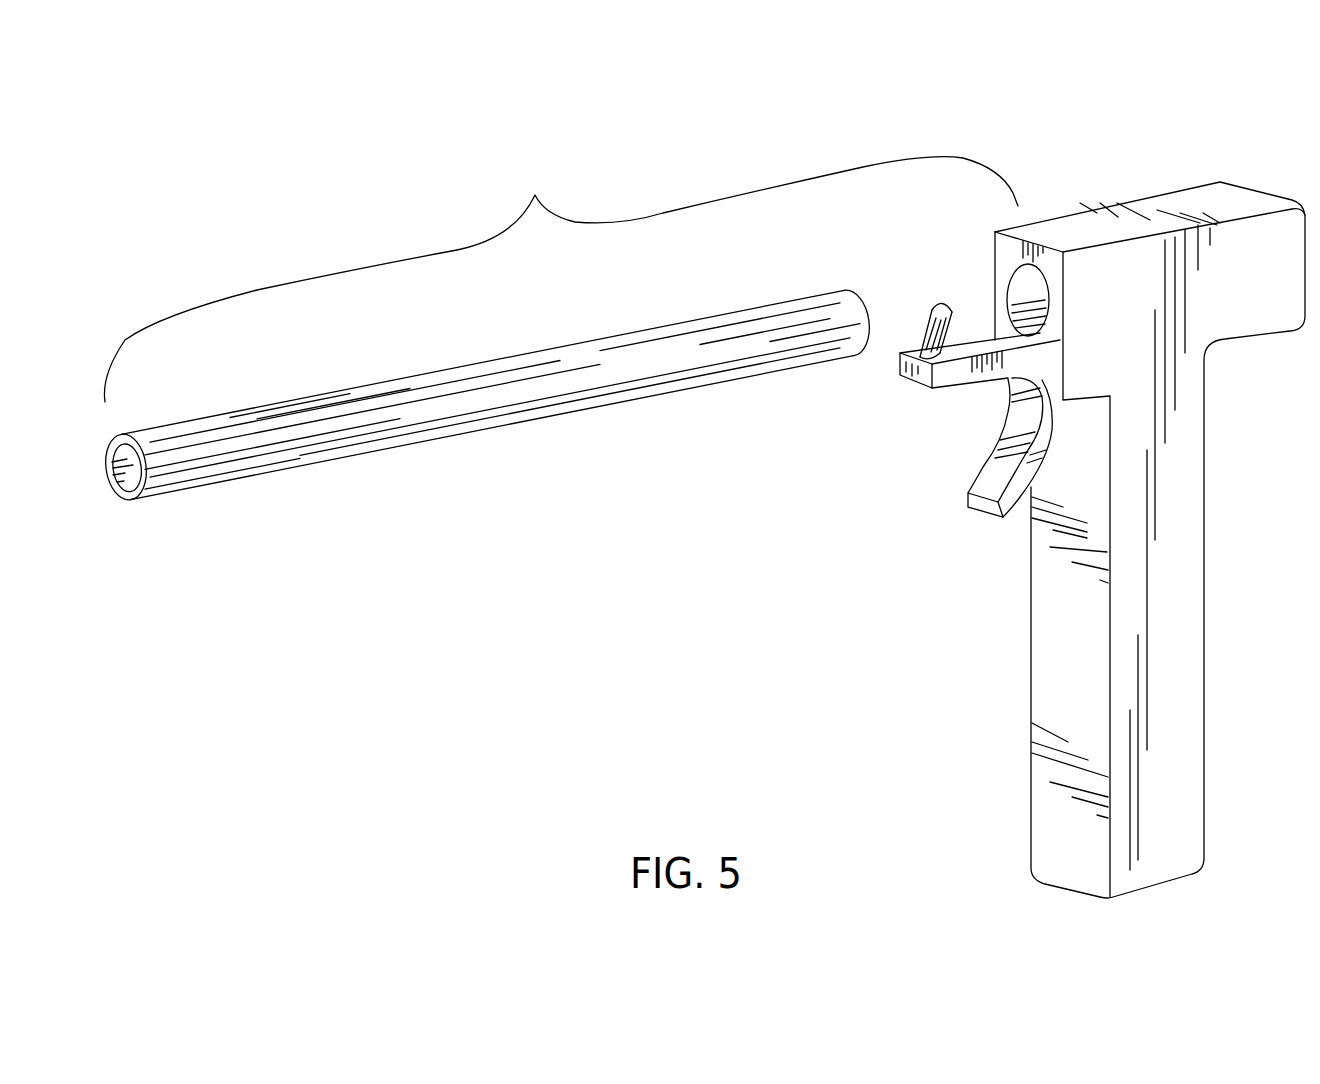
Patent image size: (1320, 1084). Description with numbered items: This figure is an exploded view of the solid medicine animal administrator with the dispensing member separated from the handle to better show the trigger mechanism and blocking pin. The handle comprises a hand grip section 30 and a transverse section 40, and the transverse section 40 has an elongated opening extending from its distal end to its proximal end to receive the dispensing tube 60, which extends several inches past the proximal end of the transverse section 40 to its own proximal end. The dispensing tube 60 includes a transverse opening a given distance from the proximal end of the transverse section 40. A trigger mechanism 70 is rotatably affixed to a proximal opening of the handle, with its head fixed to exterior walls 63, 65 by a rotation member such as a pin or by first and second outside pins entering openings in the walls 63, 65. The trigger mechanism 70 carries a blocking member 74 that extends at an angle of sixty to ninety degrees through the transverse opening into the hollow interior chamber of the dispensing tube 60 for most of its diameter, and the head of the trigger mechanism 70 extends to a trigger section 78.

The hand grip section 30 is at (1236, 600).
The transverse section 40 is at (1210, 126).
The dispensing tube 60 is at (510, 425).
The exterior wall 63 is at (1012, 278).
The exterior wall 65 is at (1040, 334).
The trigger mechanism 70 is at (968, 447).
The blocking member 74 is at (930, 317).
The trigger section 78 is at (968, 494).